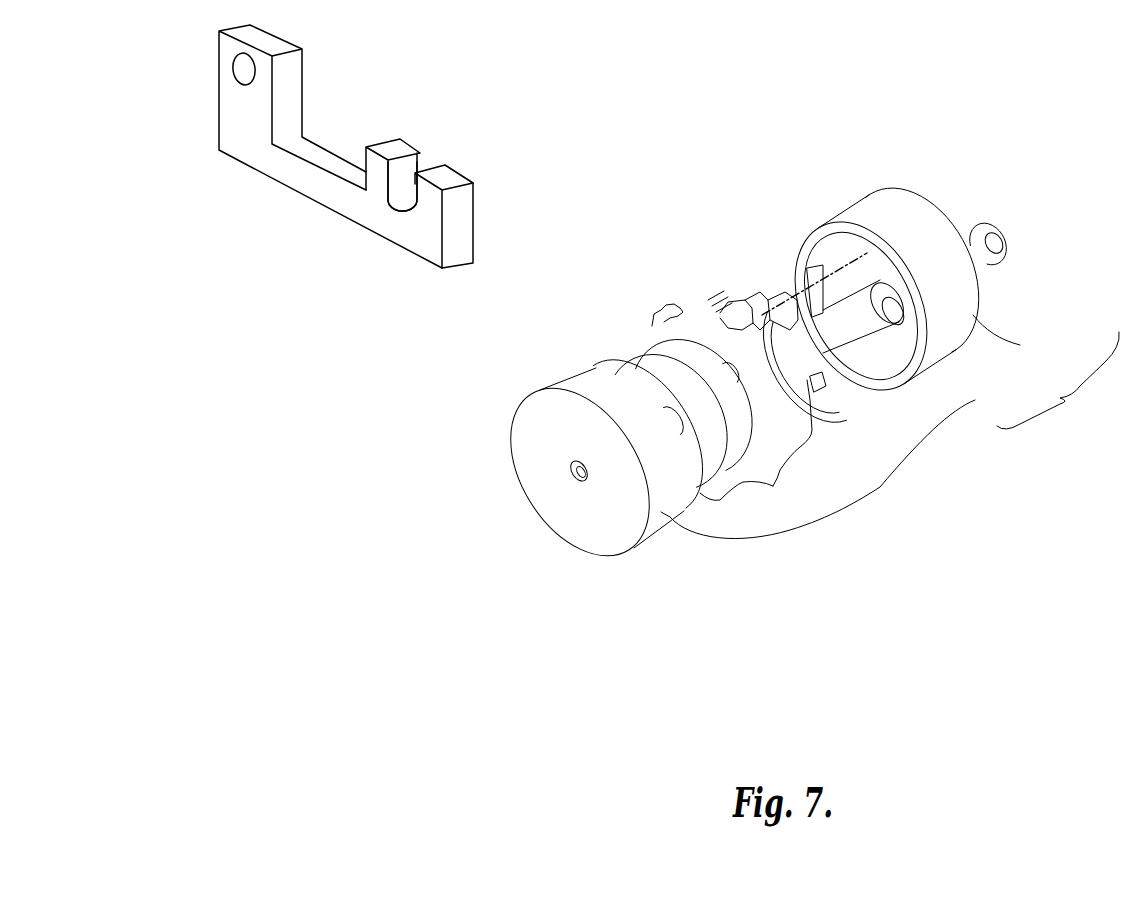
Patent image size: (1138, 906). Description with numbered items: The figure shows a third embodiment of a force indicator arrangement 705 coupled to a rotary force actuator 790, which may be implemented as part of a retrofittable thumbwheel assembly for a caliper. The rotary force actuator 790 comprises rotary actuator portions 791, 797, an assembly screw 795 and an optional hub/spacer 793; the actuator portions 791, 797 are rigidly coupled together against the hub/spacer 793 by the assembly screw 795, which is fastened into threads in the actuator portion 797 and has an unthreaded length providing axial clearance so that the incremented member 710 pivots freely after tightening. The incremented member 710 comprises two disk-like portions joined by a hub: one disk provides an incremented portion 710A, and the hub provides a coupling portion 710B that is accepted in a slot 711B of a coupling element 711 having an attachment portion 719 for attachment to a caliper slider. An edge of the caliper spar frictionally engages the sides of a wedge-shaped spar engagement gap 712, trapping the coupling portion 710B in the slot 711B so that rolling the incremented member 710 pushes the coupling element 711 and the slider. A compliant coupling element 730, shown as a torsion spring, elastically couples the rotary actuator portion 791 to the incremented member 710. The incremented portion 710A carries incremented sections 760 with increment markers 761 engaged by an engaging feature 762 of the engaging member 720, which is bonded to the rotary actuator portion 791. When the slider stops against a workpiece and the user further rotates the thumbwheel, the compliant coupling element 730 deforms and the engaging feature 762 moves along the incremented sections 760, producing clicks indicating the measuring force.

The force indicator arrangement 705 is at (935, 134).
The incremented member 710 is at (782, 448).
The incremented portion 710A is at (802, 420).
The coupling portion 710B is at (745, 383).
The coupling element 711 is at (381, 146).
The slot 711B is at (402, 204).
The spar engagement gap 712 is at (657, 305).
The attachment portion 719 is at (263, 83).
The engaging member 720 is at (777, 337).
The compliant coupling element 730 is at (822, 384).
The incremented sections 760 is at (750, 318).
The increment markers 761 is at (754, 320).
The engaging feature 762 is at (798, 298).
The rotary force actuator 790 is at (1058, 380).
The rotary actuator portion 791 is at (975, 313).
The hub/spacer 793 is at (858, 318).
The assembly screw 795 is at (1007, 247).
The rotary actuator portion 797 is at (975, 400).